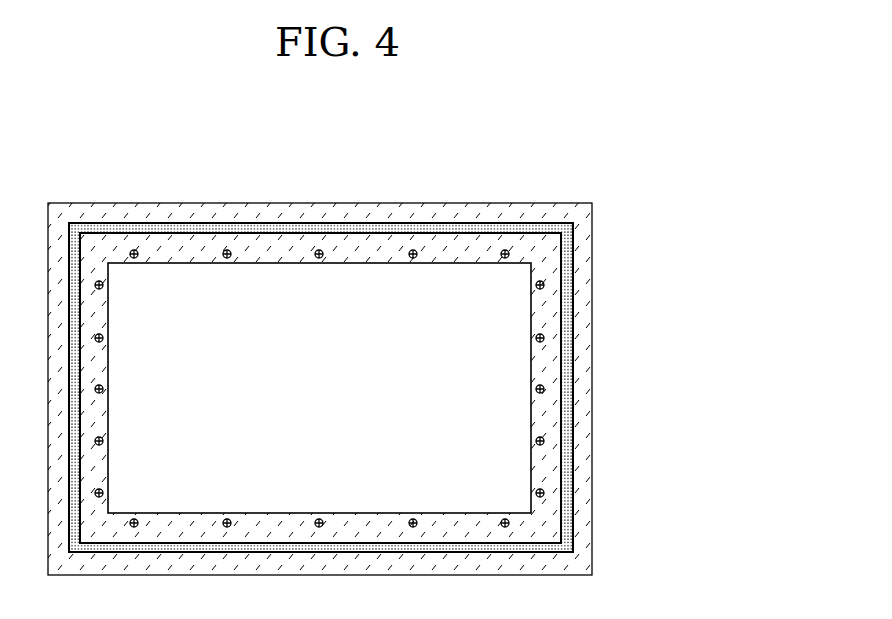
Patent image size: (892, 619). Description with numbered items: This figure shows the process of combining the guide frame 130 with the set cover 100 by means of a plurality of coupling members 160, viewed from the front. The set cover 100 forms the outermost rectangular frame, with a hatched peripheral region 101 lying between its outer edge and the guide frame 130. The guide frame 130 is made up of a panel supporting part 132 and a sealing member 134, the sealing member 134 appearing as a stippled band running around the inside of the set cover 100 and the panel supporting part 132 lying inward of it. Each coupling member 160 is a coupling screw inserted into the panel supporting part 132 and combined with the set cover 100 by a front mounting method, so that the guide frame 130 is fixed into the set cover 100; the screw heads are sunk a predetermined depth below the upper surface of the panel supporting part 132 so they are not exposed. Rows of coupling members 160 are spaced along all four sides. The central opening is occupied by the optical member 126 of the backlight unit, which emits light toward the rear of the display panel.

The set cover 100 is at (590, 203).
The housing 101 is at (580, 218).
The coupling member 160 is at (544, 284).
The sealing member 134 is at (570, 330).
The panel supporting part 132 is at (546, 362).
The guide frame 130 is at (388, 387).
The optical member 126 is at (492, 412).